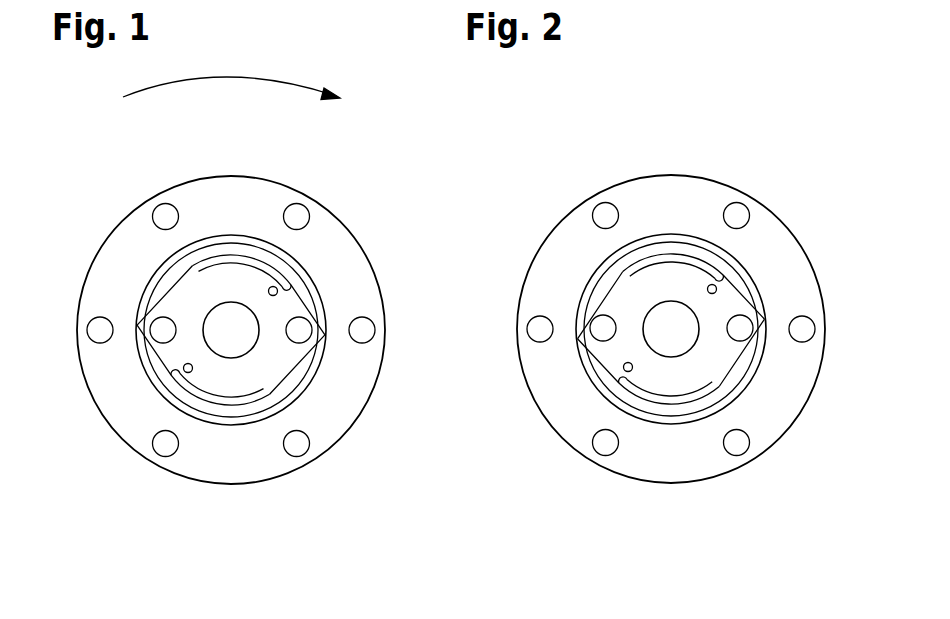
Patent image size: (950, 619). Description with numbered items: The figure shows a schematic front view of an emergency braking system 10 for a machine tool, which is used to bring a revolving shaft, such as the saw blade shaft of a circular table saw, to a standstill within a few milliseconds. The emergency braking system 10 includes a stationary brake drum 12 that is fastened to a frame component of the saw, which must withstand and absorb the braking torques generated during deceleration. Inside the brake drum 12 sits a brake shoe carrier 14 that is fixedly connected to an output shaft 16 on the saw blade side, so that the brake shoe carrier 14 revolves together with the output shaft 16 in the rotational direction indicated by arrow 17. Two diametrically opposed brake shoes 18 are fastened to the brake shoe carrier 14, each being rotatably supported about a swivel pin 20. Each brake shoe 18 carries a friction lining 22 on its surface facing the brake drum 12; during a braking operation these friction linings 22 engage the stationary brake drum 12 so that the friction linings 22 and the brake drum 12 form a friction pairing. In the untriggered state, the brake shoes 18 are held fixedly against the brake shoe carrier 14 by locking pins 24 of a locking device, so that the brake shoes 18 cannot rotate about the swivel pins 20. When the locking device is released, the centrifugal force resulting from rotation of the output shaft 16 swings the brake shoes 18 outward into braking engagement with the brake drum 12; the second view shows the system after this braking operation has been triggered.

In FIG. 1, the emergency braking system 10 is at (368, 145).
In FIG. 2, the emergency braking system 10 is at (775, 145).
In FIG. 1, the brake drum 12 is at (188, 192).
In FIG. 2, the brake drum 12 is at (628, 193).
In FIG. 1, the brake shoe carrier 14 is at (192, 300).
In FIG. 2, the brake shoe carrier 14 is at (630, 298).
In FIG. 1, the output shaft 16 is at (231, 330).
In FIG. 2, the output shaft 16 is at (672, 329).
In FIG. 1, the arrow 17 is at (206, 76).
In FIG. 1, the brake shoe 18 is at (286, 278).
In FIG. 2, the brake shoe 18 is at (720, 268).
In FIG. 1, the swivel pin 20 is at (302, 330).
In FIG. 2, the swivel pin 20 is at (603, 328).
In FIG. 1, the friction lining 22 is at (227, 250).
In FIG. 2, the friction lining 22 is at (668, 250).
In FIG. 1, the locking pin 24 is at (273, 296).
In FIG. 2, the locking pin 24 is at (712, 294).